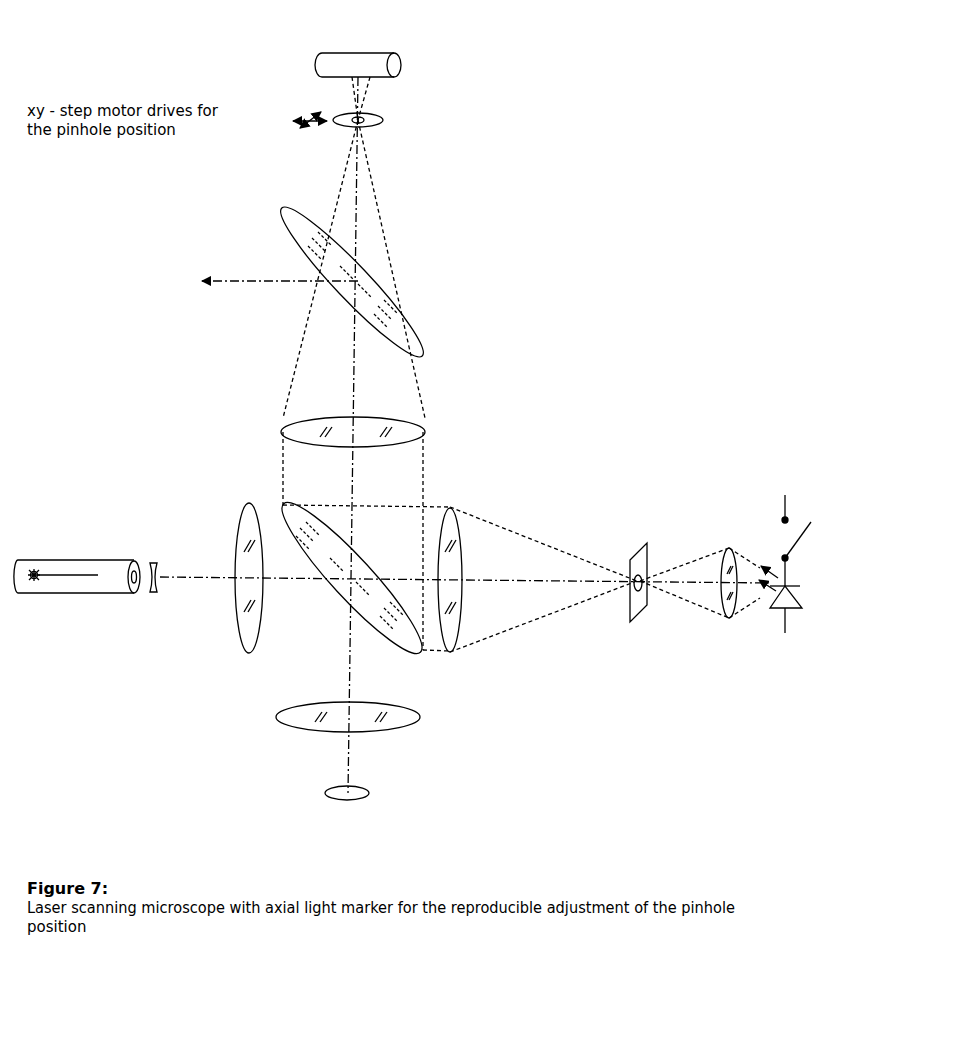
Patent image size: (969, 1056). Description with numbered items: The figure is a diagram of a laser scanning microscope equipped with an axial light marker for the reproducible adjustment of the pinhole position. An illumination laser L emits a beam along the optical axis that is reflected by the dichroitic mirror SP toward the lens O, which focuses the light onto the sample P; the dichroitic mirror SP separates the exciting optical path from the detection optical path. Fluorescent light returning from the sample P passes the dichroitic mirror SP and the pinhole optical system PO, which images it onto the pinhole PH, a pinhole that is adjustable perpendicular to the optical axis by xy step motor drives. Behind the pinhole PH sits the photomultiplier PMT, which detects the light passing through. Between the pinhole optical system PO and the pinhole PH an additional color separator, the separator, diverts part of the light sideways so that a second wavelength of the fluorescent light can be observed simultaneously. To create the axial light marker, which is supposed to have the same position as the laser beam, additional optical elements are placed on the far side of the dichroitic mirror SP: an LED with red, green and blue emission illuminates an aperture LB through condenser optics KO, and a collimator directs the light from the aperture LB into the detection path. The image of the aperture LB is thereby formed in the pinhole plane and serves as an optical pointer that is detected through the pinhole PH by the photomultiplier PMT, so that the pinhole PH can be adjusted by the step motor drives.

The photomultiplier PMT is at (353, 47).
The pinhole PH is at (355, 121).
The pinhole optical system PO is at (376, 432).
The dichroitic mirror SP is at (340, 605).
The illumination laser L is at (85, 592).
The lens O is at (366, 719).
The sample P is at (360, 792).
The aperture LB is at (633, 565).
The condenser optics KO is at (725, 563).
The element LED is at (774, 583).
The element collimator is at (486, 592).
The additional color separator is at (299, 281).